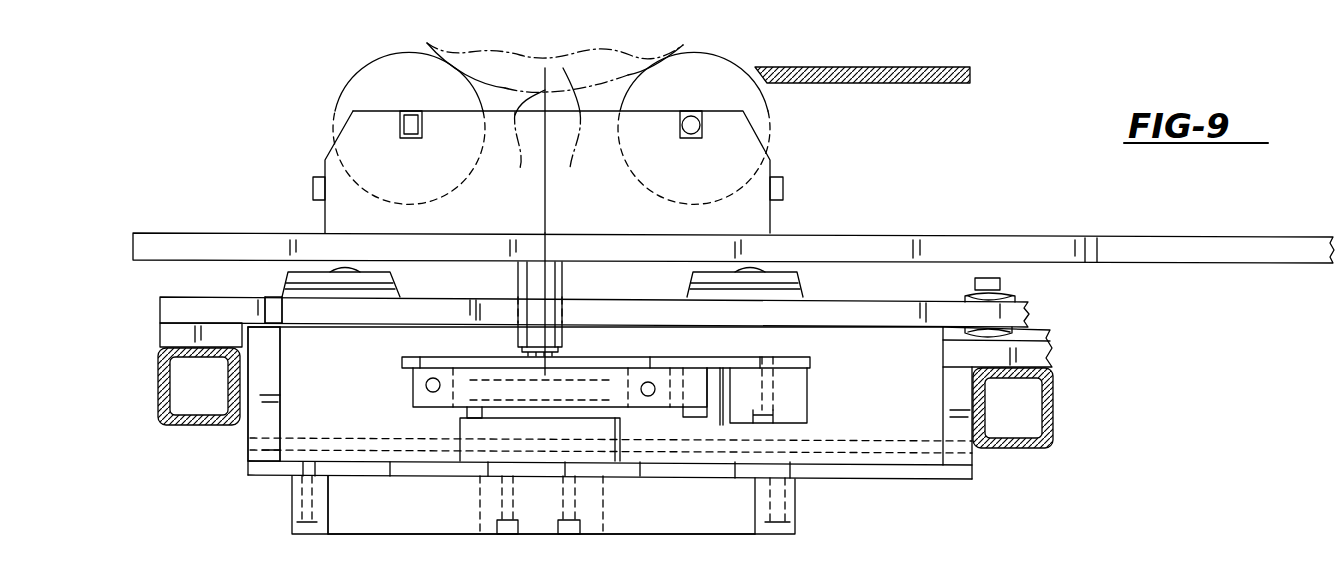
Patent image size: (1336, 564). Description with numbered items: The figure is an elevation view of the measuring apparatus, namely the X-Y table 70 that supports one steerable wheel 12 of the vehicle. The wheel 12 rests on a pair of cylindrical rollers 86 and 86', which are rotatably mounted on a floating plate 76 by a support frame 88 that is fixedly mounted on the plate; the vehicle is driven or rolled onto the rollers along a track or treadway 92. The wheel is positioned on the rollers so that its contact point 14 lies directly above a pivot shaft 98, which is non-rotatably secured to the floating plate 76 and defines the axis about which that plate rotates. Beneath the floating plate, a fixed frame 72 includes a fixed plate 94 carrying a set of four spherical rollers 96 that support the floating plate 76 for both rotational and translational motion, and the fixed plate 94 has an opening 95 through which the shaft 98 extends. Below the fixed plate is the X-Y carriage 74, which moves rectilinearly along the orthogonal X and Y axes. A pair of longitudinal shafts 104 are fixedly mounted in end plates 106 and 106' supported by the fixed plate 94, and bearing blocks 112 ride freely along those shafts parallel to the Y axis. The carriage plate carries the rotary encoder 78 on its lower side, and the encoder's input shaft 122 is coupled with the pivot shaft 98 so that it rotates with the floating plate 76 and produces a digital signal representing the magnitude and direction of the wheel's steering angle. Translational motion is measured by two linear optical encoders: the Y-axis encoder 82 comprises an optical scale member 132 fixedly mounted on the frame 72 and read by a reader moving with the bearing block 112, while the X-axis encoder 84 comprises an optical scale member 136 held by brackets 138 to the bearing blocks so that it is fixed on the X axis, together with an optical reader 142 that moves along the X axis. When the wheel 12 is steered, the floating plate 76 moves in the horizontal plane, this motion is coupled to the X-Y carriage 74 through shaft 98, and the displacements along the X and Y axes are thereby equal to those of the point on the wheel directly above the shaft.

The steerable wheel 12 is at (555, 110).
The contact point 14 is at (520, 148).
The X-Y table 70 is at (900, 192).
The fixed frame 72 is at (1060, 337).
The X-Y carriage 74 is at (408, 338).
The floating plate 76 is at (1123, 237).
The rotary encoder 78 is at (496, 382).
The Y-axis encoder 82 is at (478, 512).
The X-axis encoder 84 is at (723, 432).
The cylindrical roller 86 is at (369, 128).
The cylindrical roller 86' is at (729, 128).
The support frame 88 is at (775, 160).
The track or treadway 92 is at (975, 80).
The fixed plate 94 is at (878, 305).
The opening 95 is at (440, 315).
The spherical roller 96 is at (330, 268).
The pivot shaft 98 is at (567, 338).
The longitudinal shaft 104 is at (340, 442).
The end plate 106 is at (204, 425).
The end plate 106' is at (1011, 432).
The bearing block 112 is at (608, 453).
The input shaft 122 is at (597, 366).
The optical scale member 132 is at (443, 534).
The optical scale member 136 is at (795, 392).
The bracket 138 is at (790, 360).
The optical reader 142 is at (703, 420).